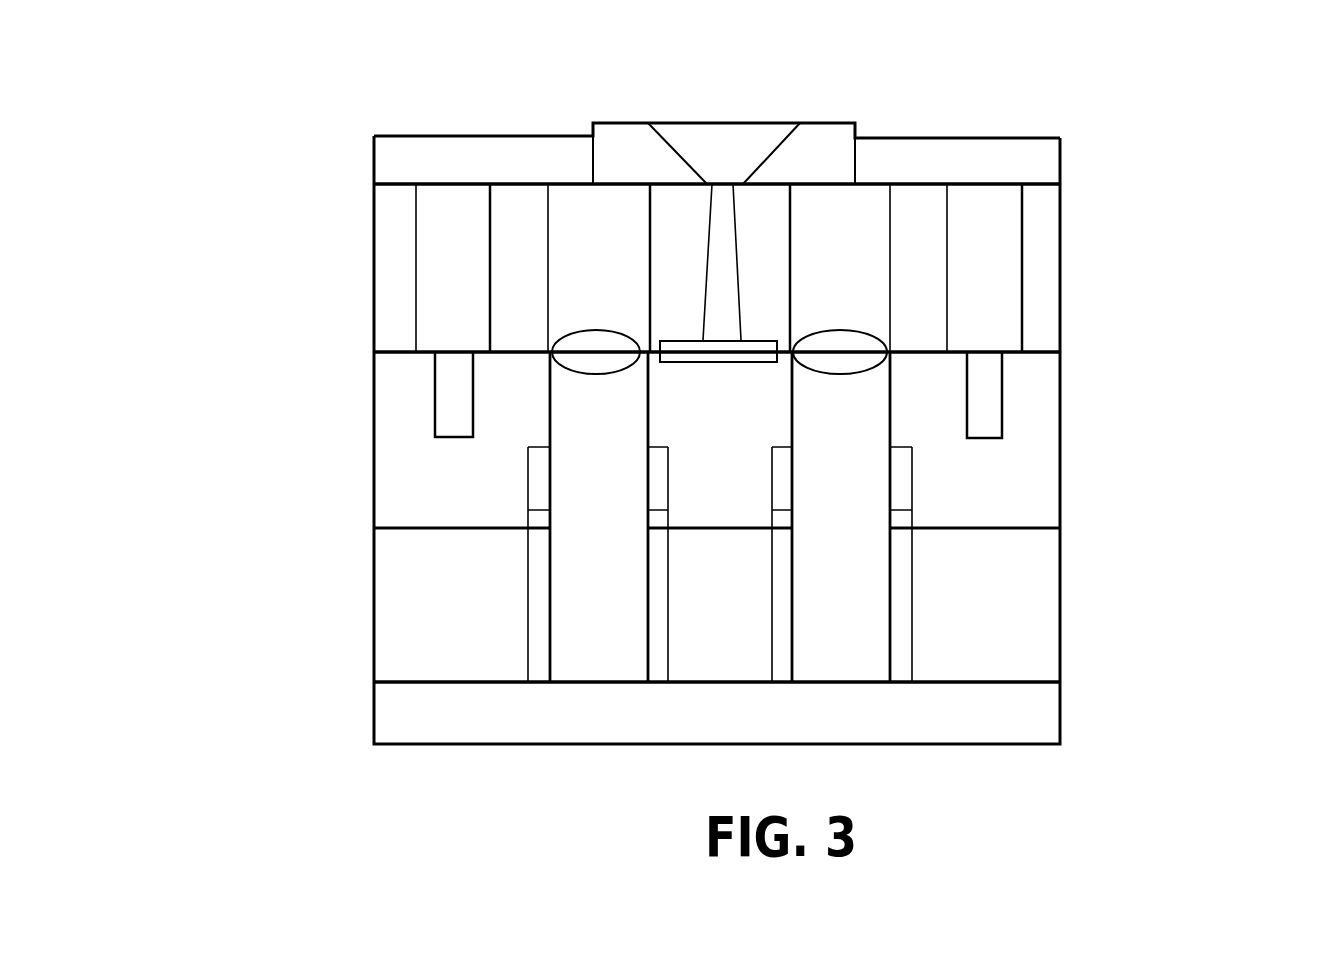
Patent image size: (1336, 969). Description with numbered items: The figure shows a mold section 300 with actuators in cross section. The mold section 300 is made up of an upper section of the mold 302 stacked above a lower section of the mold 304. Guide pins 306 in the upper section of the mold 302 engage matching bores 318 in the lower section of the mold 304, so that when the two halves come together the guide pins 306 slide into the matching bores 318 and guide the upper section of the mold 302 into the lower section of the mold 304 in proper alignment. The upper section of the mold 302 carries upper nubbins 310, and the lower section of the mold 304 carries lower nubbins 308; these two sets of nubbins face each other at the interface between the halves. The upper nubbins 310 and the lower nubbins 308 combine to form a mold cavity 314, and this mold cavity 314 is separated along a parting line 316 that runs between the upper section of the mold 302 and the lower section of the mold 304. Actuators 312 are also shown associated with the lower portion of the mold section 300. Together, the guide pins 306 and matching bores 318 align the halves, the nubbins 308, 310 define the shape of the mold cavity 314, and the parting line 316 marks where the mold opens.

The mold section 300 is at (792, 49).
The upper section of the mold 302 is at (327, 170).
The lower section of the mold 304 is at (293, 517).
The guide pins 306 is at (990, 310).
The lower nubbins 308 is at (600, 427).
The upper nubbins 310 is at (622, 258).
The actuators 312 is at (652, 497).
The mold cavity 314 is at (650, 375).
The parting line 316 is at (370, 353).
The matching bores 318 is at (427, 412).